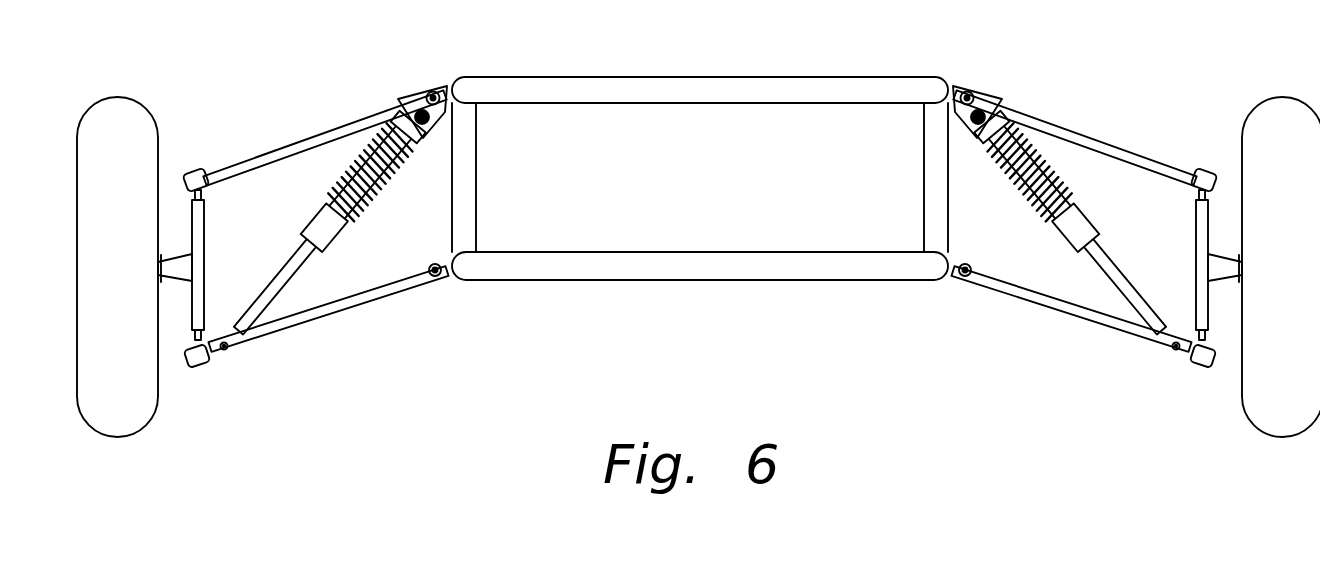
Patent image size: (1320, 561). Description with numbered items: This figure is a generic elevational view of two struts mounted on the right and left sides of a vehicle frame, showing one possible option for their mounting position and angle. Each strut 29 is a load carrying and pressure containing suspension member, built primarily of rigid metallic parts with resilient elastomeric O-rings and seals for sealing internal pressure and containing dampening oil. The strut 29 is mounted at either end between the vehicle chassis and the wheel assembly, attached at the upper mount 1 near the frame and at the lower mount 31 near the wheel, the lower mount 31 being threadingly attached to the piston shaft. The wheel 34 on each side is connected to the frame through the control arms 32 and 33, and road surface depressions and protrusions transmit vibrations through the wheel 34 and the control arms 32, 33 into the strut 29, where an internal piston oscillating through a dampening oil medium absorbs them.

The upper mount 1 is at (432, 92).
The strut 29 is at (325, 227).
The lower mount 31 is at (223, 352).
The control arm 32 is at (336, 307).
The control arm 33 is at (318, 140).
The wheel 34 is at (117, 117).